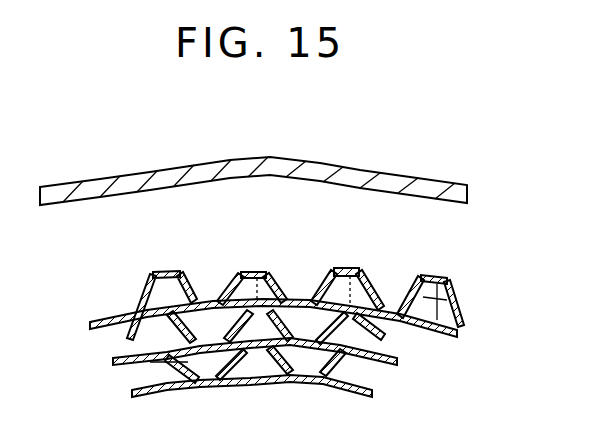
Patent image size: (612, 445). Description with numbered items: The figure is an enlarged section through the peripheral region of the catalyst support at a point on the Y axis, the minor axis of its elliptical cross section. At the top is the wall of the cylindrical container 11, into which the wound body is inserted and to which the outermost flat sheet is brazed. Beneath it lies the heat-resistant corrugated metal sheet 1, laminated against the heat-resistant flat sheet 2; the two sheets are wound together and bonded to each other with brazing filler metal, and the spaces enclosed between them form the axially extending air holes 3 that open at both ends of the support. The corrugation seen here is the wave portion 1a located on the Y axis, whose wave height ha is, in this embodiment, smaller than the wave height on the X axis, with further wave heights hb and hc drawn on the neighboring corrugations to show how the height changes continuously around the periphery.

The cylindrical container 11 is at (392, 173).
The corrugated metal sheet 1 is at (322, 271).
The wave portion 1a is at (279, 272).
The wave height ha is at (226, 292).
The corrugation height portion b hb is at (377, 270).
The corrugation height portion c hc is at (414, 278).
The flat sheet 2 is at (457, 338).
The air holes 3 is at (178, 366).